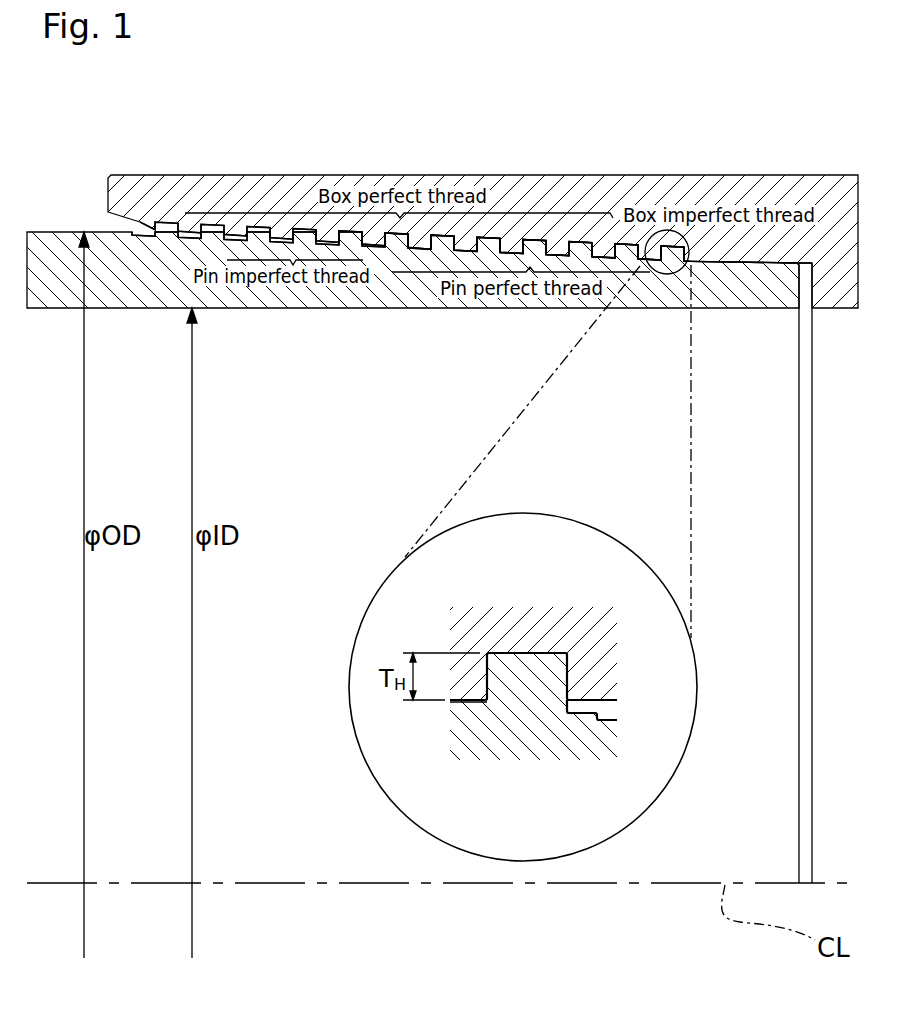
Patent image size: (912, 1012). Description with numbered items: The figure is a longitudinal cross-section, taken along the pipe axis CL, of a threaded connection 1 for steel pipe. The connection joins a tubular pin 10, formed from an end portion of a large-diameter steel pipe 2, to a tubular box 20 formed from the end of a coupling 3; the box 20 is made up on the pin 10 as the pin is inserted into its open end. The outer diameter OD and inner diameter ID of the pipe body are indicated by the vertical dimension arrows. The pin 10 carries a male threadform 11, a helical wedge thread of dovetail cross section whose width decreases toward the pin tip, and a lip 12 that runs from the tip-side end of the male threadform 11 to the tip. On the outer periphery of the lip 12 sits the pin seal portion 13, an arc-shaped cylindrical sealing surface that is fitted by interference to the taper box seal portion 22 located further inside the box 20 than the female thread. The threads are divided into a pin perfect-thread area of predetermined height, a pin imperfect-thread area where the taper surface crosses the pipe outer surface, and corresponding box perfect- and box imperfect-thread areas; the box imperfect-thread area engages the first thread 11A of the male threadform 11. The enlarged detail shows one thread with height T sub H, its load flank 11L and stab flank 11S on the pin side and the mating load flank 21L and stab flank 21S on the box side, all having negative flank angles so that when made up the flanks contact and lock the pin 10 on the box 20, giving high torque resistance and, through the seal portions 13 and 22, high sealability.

The threaded connection 1 is at (638, 113).
The steel pipe 2 is at (70, 232).
The box 3 is at (818, 176).
The pin 10 is at (332, 310).
The box 20 is at (256, 195).
The male threadform 11 is at (490, 235).
The lip 12 is at (775, 308).
The pin seal portion 13 is at (730, 265).
The box seal portion 22 is at (757, 268).
The load flank 11L is at (470, 655).
The first thread 11A is at (522, 650).
The stab flank 11S is at (580, 660).
The load flank 21L is at (490, 700).
The stab flank 21S is at (560, 715).